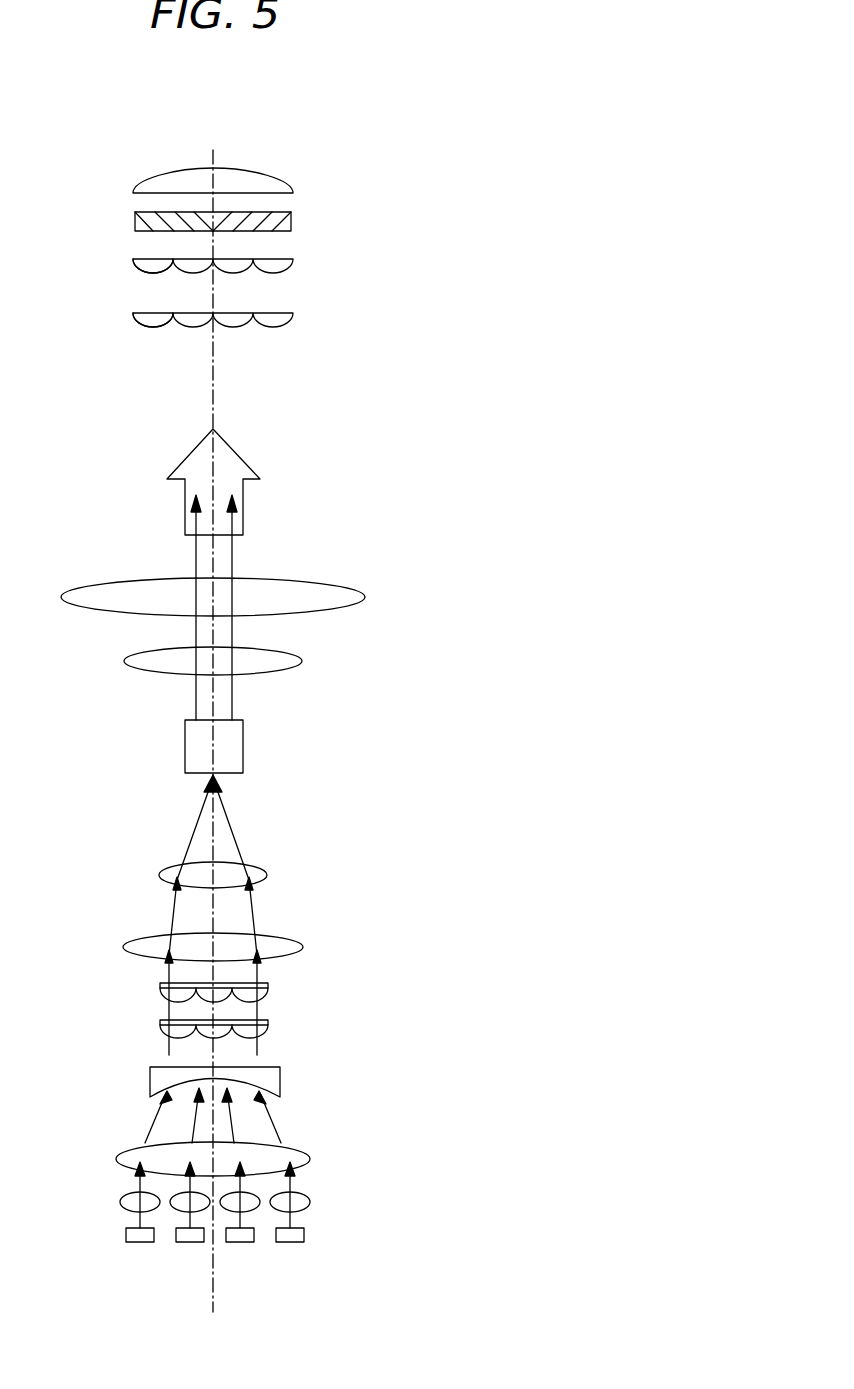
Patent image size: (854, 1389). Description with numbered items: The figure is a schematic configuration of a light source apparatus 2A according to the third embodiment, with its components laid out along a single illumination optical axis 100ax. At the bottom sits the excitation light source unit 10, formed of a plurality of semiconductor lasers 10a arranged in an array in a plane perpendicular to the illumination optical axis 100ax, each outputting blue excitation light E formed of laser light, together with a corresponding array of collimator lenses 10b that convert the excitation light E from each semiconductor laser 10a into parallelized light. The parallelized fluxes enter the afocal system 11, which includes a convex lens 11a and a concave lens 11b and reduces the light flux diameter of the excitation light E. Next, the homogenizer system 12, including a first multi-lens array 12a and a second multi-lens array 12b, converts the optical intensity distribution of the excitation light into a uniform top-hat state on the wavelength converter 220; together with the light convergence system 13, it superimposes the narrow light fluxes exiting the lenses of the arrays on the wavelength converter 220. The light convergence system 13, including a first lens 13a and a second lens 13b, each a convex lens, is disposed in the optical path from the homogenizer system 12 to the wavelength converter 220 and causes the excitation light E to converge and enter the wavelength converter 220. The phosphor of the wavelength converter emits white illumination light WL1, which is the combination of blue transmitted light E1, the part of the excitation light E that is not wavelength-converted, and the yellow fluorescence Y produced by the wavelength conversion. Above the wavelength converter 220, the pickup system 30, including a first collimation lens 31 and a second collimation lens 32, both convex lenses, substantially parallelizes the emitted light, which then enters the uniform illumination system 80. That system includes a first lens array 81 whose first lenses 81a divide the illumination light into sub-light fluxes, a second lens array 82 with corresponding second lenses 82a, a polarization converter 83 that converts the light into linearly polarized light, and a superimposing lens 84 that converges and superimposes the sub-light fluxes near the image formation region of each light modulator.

The light source apparatus 2A is at (480, 148).
The excitation light source unit 10 is at (440, 1170).
The semiconductor laser 10a is at (298, 1227).
The collimator lens 10b is at (300, 1193).
The afocal system 11 is at (440, 1072).
The convex lens 11a is at (297, 1150).
The concave lens 11b is at (280, 1085).
The homogenizer system 12 is at (440, 963).
The first multi-lens array 12a is at (268, 1042).
The second multi-lens array 12b is at (268, 1000).
The light convergence system 13 is at (440, 858).
The first lens 13a is at (270, 934).
The second lens 13b is at (265, 868).
The wavelength converter 220 is at (185, 743).
The pickup system 30 is at (440, 633).
The first collimation lens 31 is at (290, 670).
The second collimation lens 32 is at (297, 615).
The uniform illumination system 80 is at (374, 160).
The first lens array 81 is at (293, 322).
The first lens 81a is at (149, 320).
The second lens array 82 is at (293, 268).
The second lens 82a is at (149, 266).
The polarization converter 83 is at (291, 218).
The superimposing lens 84 is at (293, 180).
The illumination optical axis 100ax is at (212, 372).
The excitation light E is at (235, 845).
The blue light (transmitted light) E1 is at (195, 560).
The yellow fluorescence Y is at (233, 560).
The white illumination light WL1 is at (225, 457).